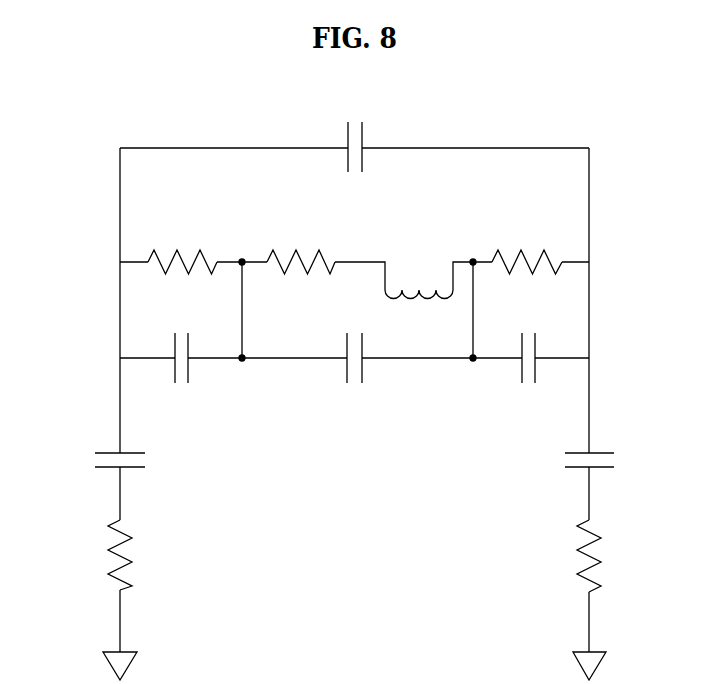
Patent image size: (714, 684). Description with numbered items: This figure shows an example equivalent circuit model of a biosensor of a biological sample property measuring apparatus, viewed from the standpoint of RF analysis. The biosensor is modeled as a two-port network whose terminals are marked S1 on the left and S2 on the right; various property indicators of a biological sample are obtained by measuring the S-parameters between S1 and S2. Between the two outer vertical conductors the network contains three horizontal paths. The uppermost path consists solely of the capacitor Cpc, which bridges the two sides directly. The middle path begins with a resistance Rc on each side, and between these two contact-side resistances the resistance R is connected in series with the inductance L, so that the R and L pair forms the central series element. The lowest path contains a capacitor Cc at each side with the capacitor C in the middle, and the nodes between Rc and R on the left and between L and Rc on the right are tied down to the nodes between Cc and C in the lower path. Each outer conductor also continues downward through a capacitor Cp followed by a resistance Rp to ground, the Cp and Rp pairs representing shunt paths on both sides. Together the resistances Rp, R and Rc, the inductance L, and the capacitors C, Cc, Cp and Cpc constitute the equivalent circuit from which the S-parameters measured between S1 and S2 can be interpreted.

The capacitor Cpc is at (349, 130).
The resistance Rc is at (355, 243).
The resistance R is at (301, 243).
The inductance L is at (419, 274).
The capacitor Cc is at (354, 376).
The capacitor C is at (354, 374).
The capacitor Cp is at (355, 462).
The resistance Rp is at (354, 556).
The S-parameter port S1 is at (113, 313).
The S-parameter port S2 is at (597, 313).